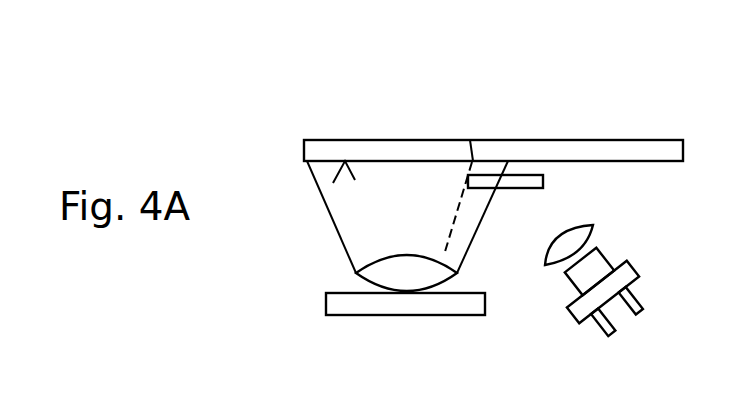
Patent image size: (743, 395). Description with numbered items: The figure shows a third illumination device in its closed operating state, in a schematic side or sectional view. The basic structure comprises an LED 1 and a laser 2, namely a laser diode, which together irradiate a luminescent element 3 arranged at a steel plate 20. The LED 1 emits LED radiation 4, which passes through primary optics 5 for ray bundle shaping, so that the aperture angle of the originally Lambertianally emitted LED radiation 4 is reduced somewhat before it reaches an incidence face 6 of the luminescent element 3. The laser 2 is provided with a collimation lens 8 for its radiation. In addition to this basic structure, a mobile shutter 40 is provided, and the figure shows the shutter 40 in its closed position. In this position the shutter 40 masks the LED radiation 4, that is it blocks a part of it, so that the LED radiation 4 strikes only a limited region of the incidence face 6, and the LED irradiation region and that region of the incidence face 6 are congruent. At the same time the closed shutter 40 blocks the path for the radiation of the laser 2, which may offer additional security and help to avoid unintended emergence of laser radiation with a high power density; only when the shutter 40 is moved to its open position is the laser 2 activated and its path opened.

The LED 1 is at (365, 303).
The laser 2 is at (592, 277).
The luminescent element 3 is at (325, 152).
The LED radiation 4 is at (387, 203).
The primary optics 5 is at (395, 278).
The incidence face 6 is at (333, 183).
The collimation lens 8 is at (562, 253).
The steel plate 20 is at (470, 140).
The shutter 40 is at (520, 182).